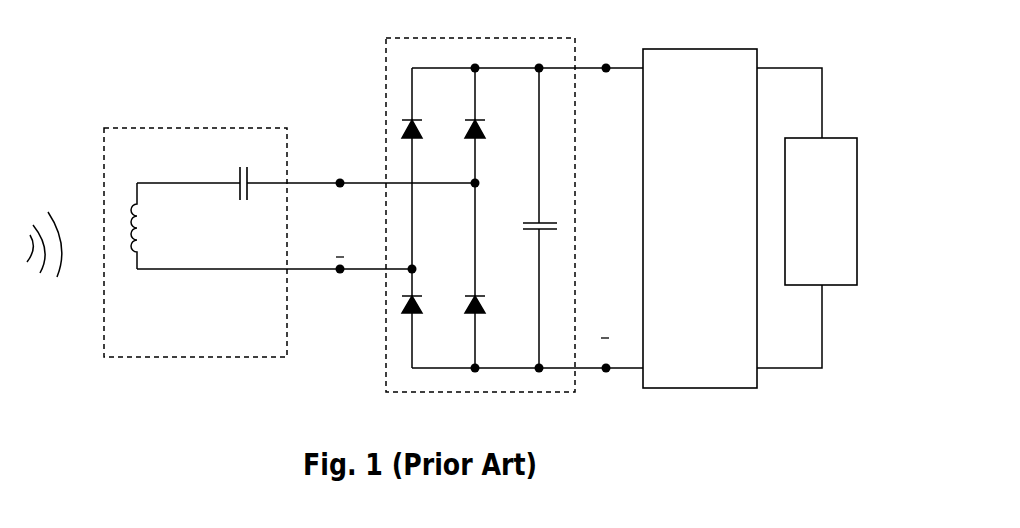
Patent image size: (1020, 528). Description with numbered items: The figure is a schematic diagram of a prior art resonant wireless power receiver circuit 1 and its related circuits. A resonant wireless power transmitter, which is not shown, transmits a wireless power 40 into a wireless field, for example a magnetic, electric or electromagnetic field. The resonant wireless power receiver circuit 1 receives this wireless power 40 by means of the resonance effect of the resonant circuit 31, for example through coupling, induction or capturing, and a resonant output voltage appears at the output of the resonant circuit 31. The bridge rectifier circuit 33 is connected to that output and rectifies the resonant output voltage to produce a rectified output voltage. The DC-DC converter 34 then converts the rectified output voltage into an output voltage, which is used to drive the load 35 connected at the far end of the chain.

The resonant wireless power receiver circuit 1 is at (276, 62).
The wireless power 40 is at (28, 218).
The resonant circuit 31 is at (273, 357).
The bridge rectifier circuit 33 is at (384, 362).
The DC-DC converter 34 is at (707, 337).
The load 35 is at (831, 273).